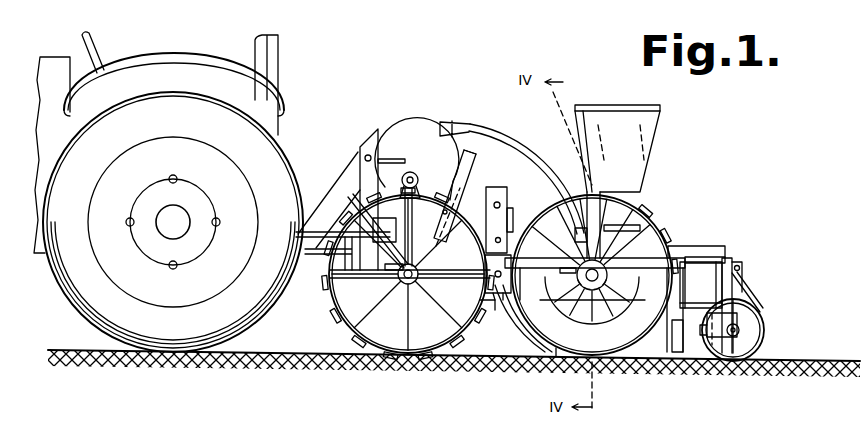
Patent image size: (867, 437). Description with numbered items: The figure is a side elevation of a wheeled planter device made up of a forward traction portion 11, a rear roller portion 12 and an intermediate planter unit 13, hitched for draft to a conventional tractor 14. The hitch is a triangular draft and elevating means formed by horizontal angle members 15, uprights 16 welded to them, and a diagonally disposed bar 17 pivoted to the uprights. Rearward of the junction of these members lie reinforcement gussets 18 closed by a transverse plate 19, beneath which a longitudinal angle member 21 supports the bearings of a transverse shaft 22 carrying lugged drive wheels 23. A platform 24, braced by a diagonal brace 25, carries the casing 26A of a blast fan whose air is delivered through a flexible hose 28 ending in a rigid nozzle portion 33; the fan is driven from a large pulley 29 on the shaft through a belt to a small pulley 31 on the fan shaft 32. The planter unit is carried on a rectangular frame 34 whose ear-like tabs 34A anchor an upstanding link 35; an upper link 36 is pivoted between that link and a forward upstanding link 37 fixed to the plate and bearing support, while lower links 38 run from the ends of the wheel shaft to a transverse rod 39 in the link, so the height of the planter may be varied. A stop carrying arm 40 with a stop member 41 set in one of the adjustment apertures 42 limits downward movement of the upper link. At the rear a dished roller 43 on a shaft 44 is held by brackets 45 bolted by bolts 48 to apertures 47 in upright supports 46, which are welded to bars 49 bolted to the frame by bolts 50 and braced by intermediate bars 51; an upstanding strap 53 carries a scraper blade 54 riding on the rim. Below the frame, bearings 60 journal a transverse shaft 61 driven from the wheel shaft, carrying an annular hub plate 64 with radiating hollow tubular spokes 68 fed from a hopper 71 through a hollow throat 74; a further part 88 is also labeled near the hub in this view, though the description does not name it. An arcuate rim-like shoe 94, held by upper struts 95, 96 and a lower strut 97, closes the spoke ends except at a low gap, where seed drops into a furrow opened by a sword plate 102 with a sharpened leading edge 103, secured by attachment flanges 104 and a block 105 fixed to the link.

The forward traction portion 11 is at (358, 114).
The rear roller portion 12 is at (746, 319).
The intermediate planter unit 13 is at (699, 203).
The tractor 14 is at (291, 49).
The angle members 15 is at (311, 250).
The uprights 16 is at (370, 148).
The diagonal bar 17 is at (338, 190).
The reinforcement gussets 18 is at (387, 232).
The plate 19 is at (370, 255).
The angle member 21 is at (390, 267).
The transverse shaft 22 is at (400, 277).
The drive wheels 23 is at (403, 274).
The platform 24 is at (398, 222).
The diagonal brace 25 is at (392, 160).
The casing 26A is at (401, 120).
The flexible hose 28 is at (505, 131).
The large pulley 29 is at (408, 274).
The small pulley 31 is at (415, 176).
The fan shaft 32 is at (405, 179).
The rigid nozzle portion 33 is at (592, 275).
The frame 34 is at (545, 277).
The ear-like tabs 34A is at (487, 260).
The upstanding link 35 is at (505, 190).
The upper link 36 is at (463, 187).
The forward upstanding link 37 is at (414, 196).
The lower links 38 is at (452, 279).
The transverse rod 39 is at (502, 293).
The stop carrying arm 40 is at (472, 157).
The stop member 41 is at (446, 210).
The adjustment apertures 42 is at (445, 241).
The roller 43 is at (764, 323).
The shaft 44 is at (735, 327).
The brackets 45 is at (736, 334).
The upright supports 46 is at (714, 283).
The apertures 47 is at (712, 322).
The bolts 48 is at (702, 329).
The bars 49 is at (708, 259).
The bolts 50 is at (690, 252).
The intermediate bars 51 is at (739, 268).
The upstanding strap 53 is at (737, 262).
The scraper blade 54 is at (741, 283).
The bearings 60 is at (608, 270).
The transverse shaft 61 is at (596, 268).
The annular hub plate 64 is at (562, 288).
The hollow tubular spokes 68 is at (591, 260).
The hopper 71 is at (650, 136).
The hollow throat 74 is at (640, 197).
The bearing 88 is at (566, 263).
The arcuate rim-like shoe 94 is at (660, 224).
The upper strut 95 is at (511, 237).
The upper strut 96 is at (686, 244).
The lower strut 97 is at (482, 306).
The plate-like element 102 is at (555, 341).
The sharpened leading edge 103 is at (510, 341).
The attachment flanges 104 is at (672, 329).
The block 105 is at (490, 296).